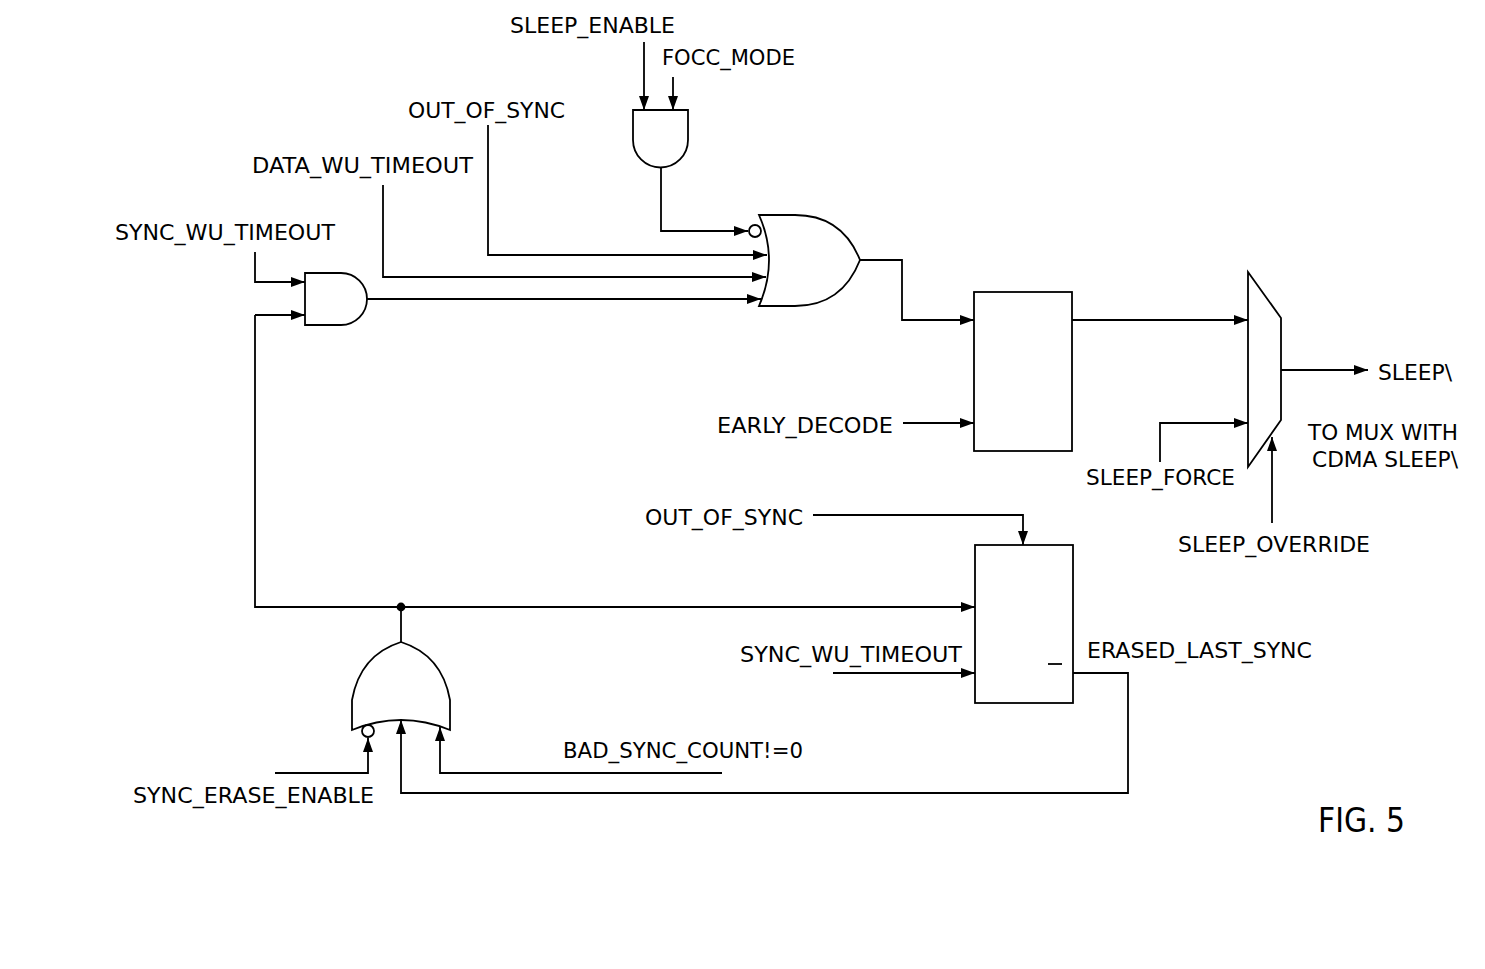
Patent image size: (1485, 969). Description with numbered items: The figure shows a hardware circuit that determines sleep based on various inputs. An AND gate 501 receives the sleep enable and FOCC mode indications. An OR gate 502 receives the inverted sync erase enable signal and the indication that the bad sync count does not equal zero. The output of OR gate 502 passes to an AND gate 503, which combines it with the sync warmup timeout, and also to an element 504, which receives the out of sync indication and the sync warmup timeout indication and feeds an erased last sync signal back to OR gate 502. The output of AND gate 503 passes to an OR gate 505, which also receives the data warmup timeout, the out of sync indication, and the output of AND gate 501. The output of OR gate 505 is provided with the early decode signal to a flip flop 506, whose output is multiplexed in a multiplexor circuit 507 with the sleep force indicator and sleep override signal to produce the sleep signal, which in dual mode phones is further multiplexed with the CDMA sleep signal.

The AND gate 501 is at (680, 162).
The OR gate 502 is at (425, 656).
The AND gate 503 is at (350, 325).
The element 504 is at (1050, 545).
The OR gate 505 is at (819, 218).
The flip flop 506 is at (1045, 292).
The multiplexor circuit 507 is at (1262, 290).